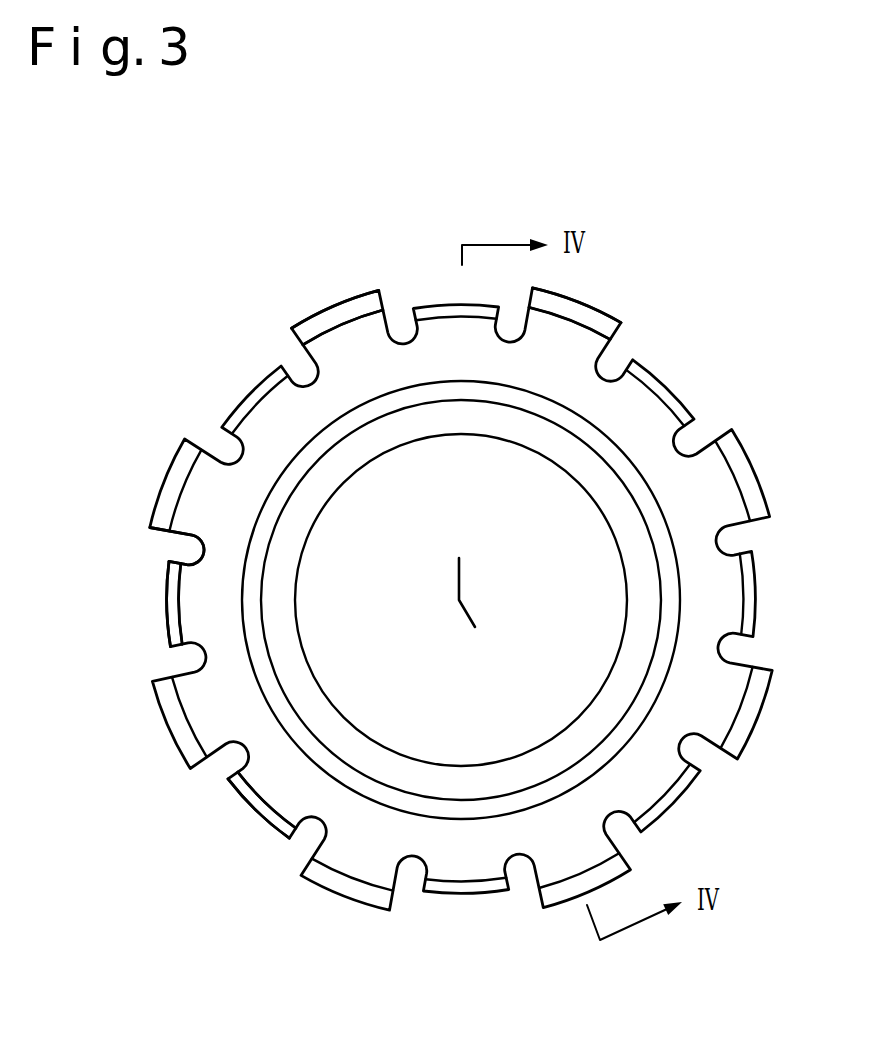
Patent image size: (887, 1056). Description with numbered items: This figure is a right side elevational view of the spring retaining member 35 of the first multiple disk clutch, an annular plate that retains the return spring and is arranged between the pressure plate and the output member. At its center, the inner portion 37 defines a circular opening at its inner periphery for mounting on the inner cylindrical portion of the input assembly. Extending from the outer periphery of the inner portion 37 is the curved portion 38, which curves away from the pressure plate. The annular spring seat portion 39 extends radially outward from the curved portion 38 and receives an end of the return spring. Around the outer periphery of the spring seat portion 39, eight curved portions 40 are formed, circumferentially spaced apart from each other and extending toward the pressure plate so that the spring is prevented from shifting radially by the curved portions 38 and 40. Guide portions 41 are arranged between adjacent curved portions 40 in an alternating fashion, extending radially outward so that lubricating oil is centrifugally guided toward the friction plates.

The spring retaining member 35 is at (243, 395).
The inner portion 37 is at (285, 545).
The curved portion 38 is at (302, 463).
The annular spring seat portion 39 is at (235, 522).
The curved portions 40 is at (162, 613).
The guide portions 41 is at (318, 320).